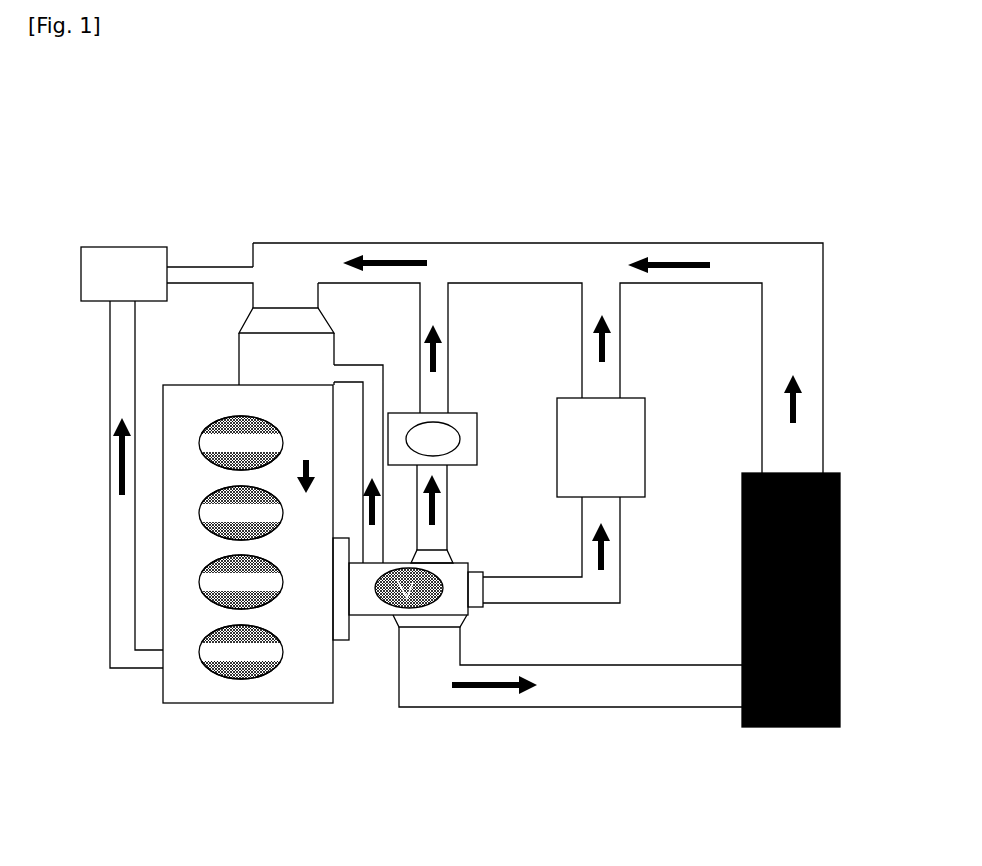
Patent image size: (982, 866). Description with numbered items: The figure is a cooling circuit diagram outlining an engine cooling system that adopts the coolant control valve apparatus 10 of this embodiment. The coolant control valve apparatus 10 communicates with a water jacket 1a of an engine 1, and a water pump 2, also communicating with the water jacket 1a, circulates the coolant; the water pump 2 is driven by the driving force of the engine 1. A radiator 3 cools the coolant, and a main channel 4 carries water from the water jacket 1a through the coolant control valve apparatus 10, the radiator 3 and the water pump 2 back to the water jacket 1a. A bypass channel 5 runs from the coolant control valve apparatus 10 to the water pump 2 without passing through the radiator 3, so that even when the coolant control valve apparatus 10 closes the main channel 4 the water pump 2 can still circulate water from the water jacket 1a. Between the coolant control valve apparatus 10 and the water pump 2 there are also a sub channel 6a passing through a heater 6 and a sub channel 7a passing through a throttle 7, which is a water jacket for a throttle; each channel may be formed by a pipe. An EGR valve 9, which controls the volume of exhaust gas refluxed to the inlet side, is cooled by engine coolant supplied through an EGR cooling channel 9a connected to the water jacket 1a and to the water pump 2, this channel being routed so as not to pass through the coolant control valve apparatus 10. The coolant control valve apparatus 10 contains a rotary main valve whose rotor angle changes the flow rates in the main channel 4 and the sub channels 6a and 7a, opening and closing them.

The engine 1 is at (183, 687).
The water jacket 1a is at (297, 703).
The water pump 2 is at (241, 360).
The radiator 3 is at (841, 510).
The main channel 4 is at (612, 707).
The bypass channel 5 is at (358, 372).
The heater 6 is at (645, 415).
The sub channel 6a is at (621, 510).
The throttle 7 is at (450, 413).
The sub channel 7a is at (448, 497).
The EGR valve 9 is at (147, 247).
The EGR cooling channel 9a is at (110, 378).
The coolant control valve apparatus 10 is at (365, 615).